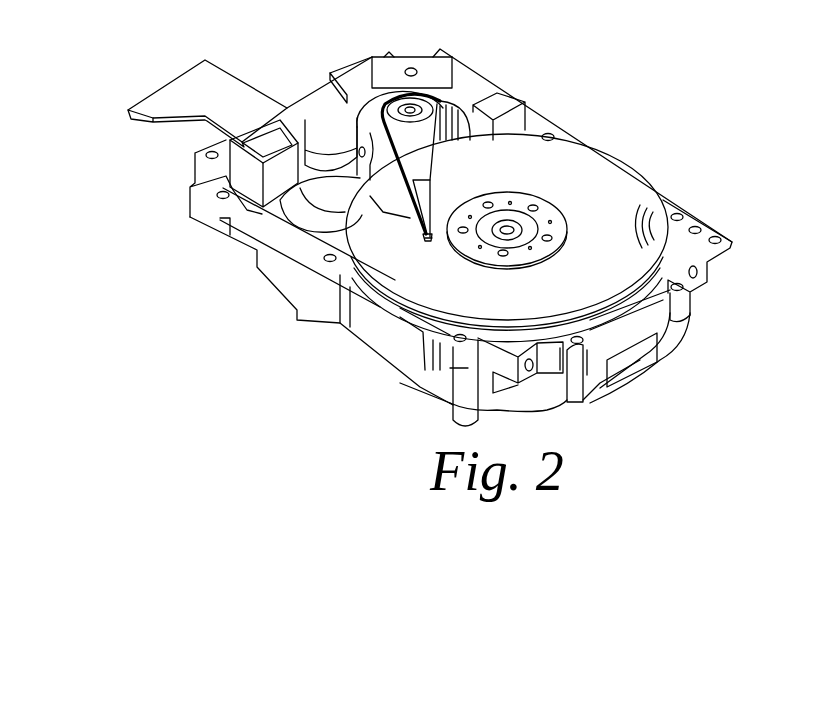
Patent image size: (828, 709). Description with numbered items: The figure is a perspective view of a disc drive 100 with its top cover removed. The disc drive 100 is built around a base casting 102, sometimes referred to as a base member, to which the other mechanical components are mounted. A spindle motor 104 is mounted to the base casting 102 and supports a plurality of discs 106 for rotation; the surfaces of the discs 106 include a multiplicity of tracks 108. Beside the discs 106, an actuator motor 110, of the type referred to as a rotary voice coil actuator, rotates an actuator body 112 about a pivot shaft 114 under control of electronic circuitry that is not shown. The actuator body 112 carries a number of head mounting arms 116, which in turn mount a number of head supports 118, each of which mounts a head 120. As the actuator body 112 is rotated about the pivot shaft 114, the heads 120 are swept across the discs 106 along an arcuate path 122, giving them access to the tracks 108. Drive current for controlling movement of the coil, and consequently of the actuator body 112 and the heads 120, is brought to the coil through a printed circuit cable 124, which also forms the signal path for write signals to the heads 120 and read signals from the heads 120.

The disc drive 100 is at (170, 55).
The base casting 102 is at (358, 360).
The spindle motor 104 is at (527, 228).
The discs 106 is at (585, 172).
The tracks 108 is at (650, 218).
The actuator motor 110 is at (450, 50).
The actuator body 112 is at (420, 152).
The pivot shaft 114 is at (432, 97).
The head mounting arms 116 is at (424, 197).
The head supports 118 is at (422, 232).
The head 120 is at (430, 236).
The arcuate path 122 is at (409, 218).
The printed circuit cable 124 is at (320, 130).